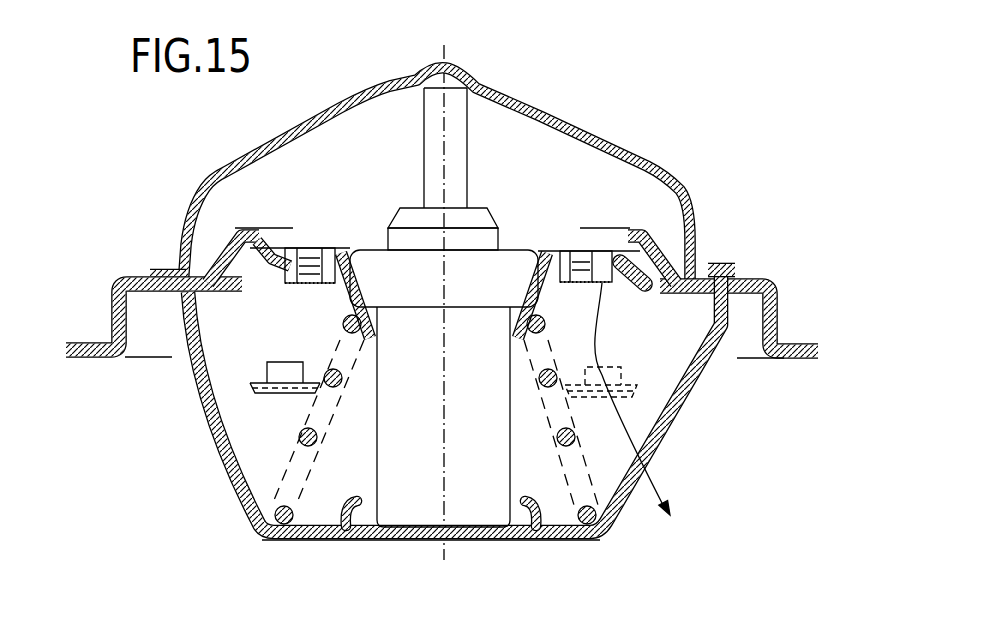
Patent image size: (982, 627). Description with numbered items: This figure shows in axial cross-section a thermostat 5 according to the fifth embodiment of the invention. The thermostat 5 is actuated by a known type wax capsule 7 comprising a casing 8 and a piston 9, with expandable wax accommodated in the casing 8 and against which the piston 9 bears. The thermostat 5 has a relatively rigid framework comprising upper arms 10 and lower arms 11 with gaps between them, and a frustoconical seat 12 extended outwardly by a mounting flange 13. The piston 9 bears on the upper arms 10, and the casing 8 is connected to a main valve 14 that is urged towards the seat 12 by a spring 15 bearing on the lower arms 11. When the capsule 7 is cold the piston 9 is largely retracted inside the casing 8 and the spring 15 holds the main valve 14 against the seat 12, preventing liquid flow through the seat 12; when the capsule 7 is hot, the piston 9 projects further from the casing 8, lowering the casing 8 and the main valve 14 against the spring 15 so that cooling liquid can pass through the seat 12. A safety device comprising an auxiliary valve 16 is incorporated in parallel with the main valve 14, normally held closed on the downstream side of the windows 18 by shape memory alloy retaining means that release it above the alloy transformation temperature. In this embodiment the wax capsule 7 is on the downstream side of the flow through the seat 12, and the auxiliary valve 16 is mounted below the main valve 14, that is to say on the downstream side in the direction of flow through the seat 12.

The thermostat 5 is at (705, 182).
The wax capsule 7 is at (381, 526).
The casing 8 is at (415, 411).
The piston 9 is at (462, 160).
The upper arms 10 is at (567, 121).
The lower arms 11 is at (668, 420).
The frustoconical seat 12 is at (237, 243).
The mounting flange 13 is at (89, 360).
The main valve 14 is at (242, 294).
The spring 15 is at (314, 442).
The auxiliary valve 16 is at (298, 284).
The windows 18 is at (577, 253).